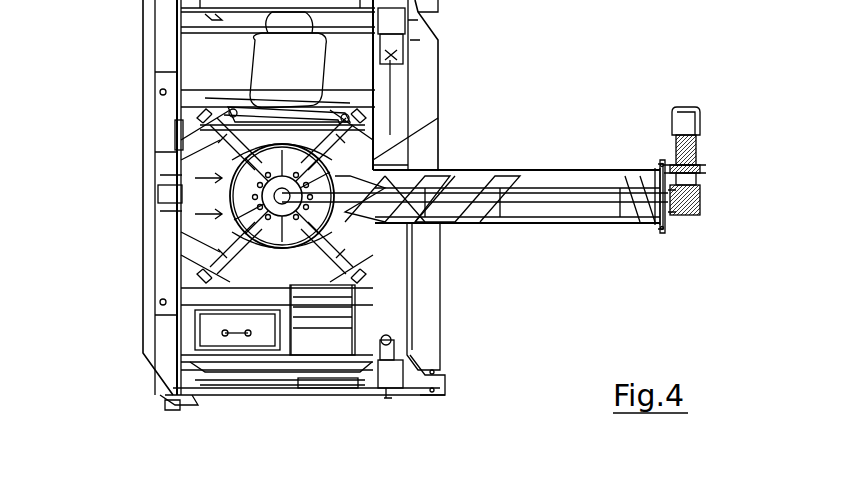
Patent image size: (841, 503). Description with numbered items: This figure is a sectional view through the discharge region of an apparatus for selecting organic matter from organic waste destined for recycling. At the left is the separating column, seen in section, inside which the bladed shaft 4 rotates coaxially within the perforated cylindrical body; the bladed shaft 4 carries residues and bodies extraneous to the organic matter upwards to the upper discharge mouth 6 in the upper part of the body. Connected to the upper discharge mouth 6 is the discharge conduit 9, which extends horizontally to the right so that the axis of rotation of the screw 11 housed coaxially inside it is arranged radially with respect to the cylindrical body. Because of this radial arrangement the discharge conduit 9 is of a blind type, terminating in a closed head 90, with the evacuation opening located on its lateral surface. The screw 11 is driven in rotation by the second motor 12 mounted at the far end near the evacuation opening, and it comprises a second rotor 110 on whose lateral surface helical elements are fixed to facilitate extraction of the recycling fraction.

The bladed shaft 4 is at (253, 203).
The upper discharge mouth 6 is at (373, 170).
The discharge conduit 9 is at (602, 173).
The screw 11 is at (472, 197).
The second motor 12 is at (715, 128).
The closed head 90 is at (677, 221).
The second rotor 110 is at (550, 200).